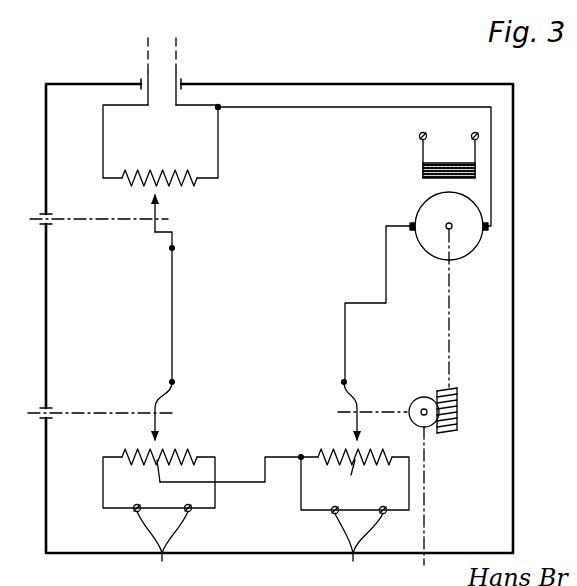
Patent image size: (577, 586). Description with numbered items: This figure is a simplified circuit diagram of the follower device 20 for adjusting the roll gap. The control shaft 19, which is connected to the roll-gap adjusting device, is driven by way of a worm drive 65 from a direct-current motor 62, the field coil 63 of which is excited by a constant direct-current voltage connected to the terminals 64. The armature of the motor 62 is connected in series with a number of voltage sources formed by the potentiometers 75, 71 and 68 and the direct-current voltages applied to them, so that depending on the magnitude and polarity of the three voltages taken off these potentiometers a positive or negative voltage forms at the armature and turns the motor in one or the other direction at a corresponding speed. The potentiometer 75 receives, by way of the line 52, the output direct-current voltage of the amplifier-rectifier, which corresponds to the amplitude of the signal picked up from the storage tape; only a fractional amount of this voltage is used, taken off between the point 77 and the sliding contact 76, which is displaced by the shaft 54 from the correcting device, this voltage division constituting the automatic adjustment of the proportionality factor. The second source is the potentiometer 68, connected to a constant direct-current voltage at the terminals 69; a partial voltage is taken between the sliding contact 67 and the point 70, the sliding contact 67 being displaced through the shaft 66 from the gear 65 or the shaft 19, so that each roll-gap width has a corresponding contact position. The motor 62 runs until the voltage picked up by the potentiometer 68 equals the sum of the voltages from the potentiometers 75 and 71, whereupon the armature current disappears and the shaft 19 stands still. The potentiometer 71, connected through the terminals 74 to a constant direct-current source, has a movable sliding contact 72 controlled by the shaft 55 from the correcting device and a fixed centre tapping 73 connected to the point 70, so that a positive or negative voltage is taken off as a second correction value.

The control shaft 19 is at (431, 560).
The follower device 20 is at (516, 332).
The line 52 is at (176, 65).
The shaft 54 is at (30, 221).
The shaft 55 is at (32, 412).
The direct-current motor 62 is at (468, 245).
The field coil 63 is at (475, 178).
The terminals 64 is at (473, 132).
The worm drive 65 is at (433, 391).
The shaft 66 is at (380, 411).
The sliding contact 67 is at (363, 443).
The potentiometer 68 is at (355, 479).
The terminals 69 is at (360, 547).
The point 70 is at (298, 463).
The potentiometer 71 is at (130, 455).
The sliding contact 72 is at (162, 445).
The centre tapping 73 is at (158, 466).
The terminals 74 is at (163, 546).
The potentiometer 75 is at (163, 172).
The sliding contact 76 is at (151, 200).
The point 77 is at (218, 107).